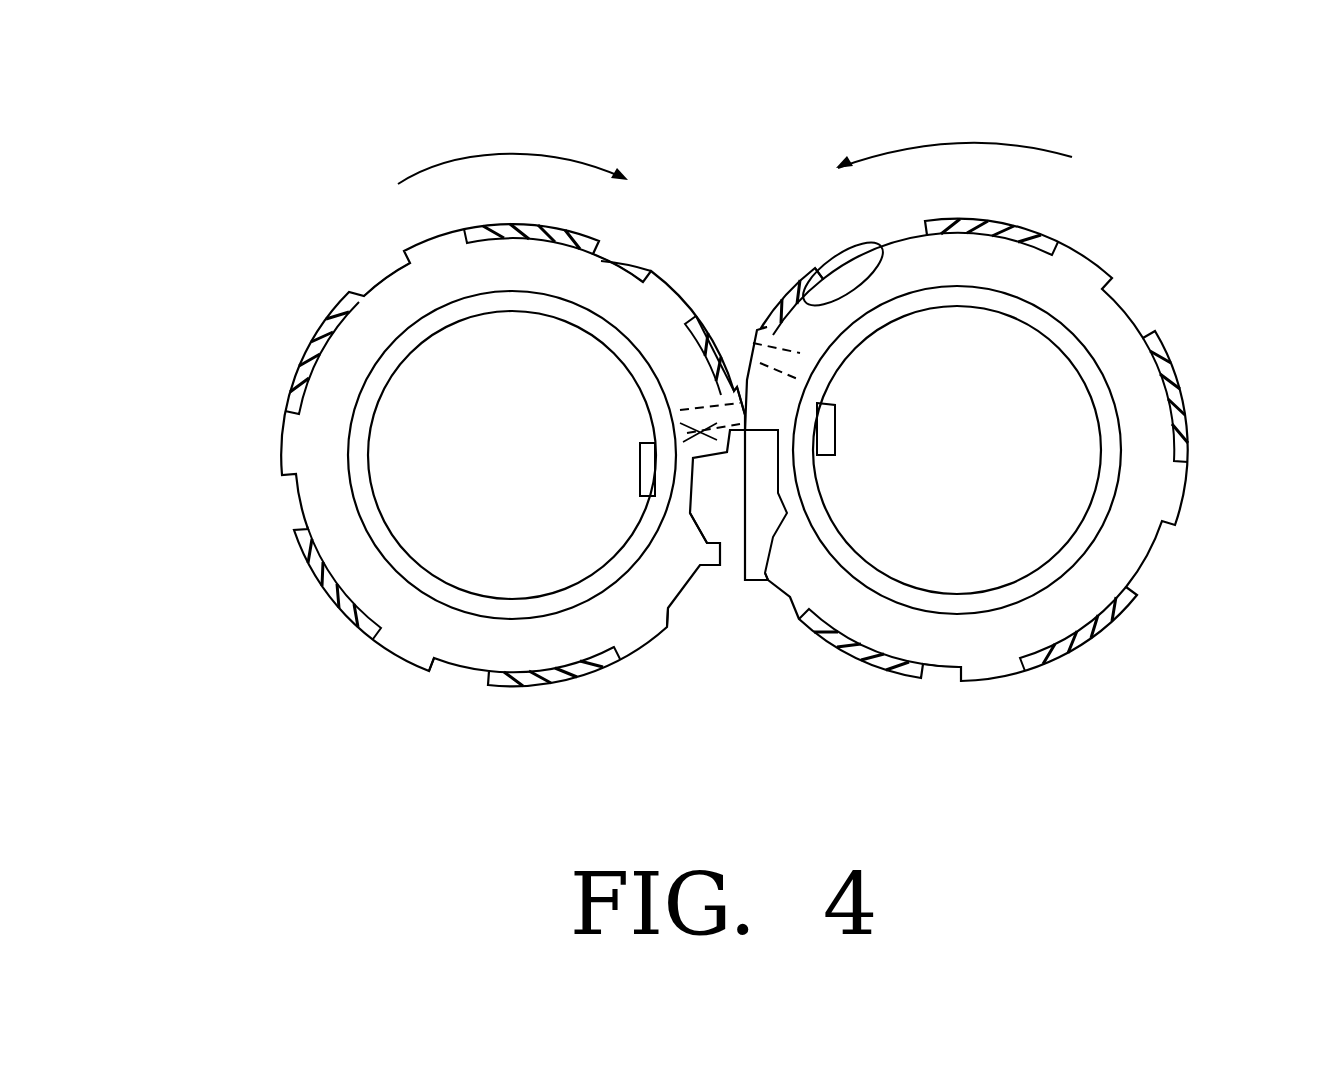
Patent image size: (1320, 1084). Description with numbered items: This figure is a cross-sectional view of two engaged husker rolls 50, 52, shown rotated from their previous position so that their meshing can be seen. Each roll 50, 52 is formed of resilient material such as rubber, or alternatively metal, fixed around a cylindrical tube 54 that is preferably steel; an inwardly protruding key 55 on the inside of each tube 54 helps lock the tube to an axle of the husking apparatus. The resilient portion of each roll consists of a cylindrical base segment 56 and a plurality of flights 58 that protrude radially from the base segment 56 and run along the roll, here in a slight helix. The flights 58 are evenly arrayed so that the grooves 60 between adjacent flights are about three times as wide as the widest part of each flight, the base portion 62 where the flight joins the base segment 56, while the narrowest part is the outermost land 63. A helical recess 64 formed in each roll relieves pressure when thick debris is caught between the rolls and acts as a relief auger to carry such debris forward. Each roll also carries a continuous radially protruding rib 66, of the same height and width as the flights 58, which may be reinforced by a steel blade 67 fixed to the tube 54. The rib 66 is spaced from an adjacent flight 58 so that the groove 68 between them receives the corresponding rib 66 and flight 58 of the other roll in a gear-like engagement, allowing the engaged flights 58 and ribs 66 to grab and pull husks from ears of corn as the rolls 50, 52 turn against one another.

The husker roll 50 is at (315, 318).
The husker roll 52 is at (1186, 372).
The cylindrical tube 54 is at (360, 476).
The key 55 is at (640, 470).
The base segment 56 is at (390, 285).
The flight 58 is at (405, 670).
The groove 60 is at (622, 248).
The base portion 62 is at (648, 278).
The outermost land 63 is at (700, 290).
The helical recess 64 is at (770, 513).
The rib 66 is at (748, 332).
The steel blade 67 is at (843, 352).
The groove 68 is at (877, 250).